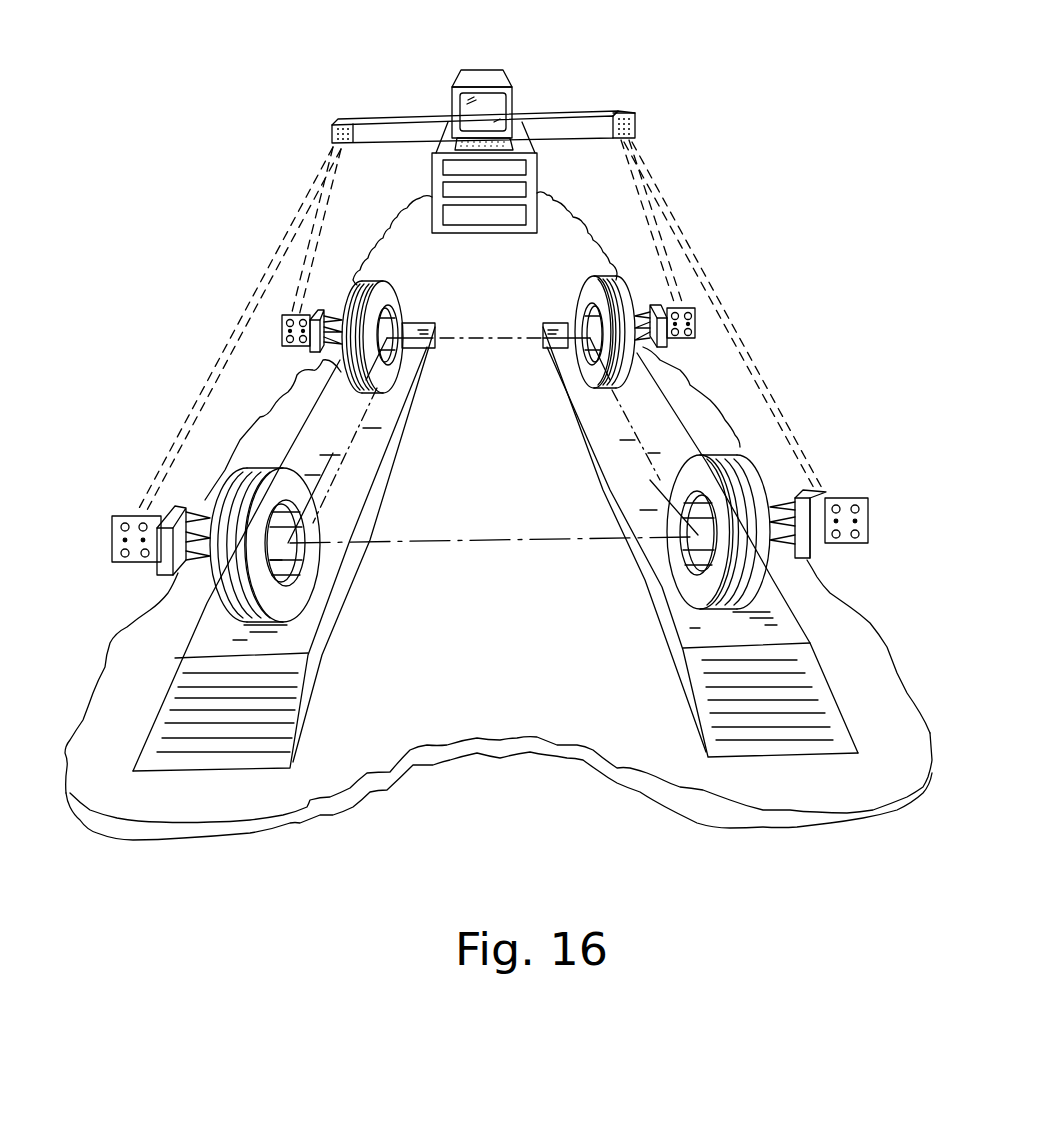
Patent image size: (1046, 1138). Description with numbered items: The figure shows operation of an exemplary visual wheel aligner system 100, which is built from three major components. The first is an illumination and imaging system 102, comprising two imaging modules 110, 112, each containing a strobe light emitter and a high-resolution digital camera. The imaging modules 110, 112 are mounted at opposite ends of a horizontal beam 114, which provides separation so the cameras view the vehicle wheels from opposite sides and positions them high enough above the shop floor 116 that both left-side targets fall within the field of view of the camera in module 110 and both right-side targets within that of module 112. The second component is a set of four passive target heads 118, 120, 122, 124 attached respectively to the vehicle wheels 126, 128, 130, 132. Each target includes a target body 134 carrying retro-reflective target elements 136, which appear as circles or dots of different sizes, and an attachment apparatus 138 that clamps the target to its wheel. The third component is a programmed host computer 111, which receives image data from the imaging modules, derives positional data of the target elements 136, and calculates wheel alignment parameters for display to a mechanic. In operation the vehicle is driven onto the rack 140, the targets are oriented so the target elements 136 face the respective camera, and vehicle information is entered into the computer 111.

The aligner system 100 is at (838, 272).
The illumination and imaging system 102 is at (597, 75).
The imaging module 110 is at (331, 129).
The host computer 111 is at (487, 78).
The imaging module 112 is at (636, 120).
The horizontal beam 114 is at (427, 118).
The shop floor 116 is at (415, 255).
The target head 118 is at (282, 330).
The target head 120 is at (130, 517).
The target head 122 is at (697, 312).
The target head 124 is at (840, 548).
The vehicle wheel 126 is at (398, 370).
The vehicle wheel 128 is at (305, 590).
The vehicle wheel 130 is at (585, 373).
The vehicle wheel 132 is at (681, 572).
The target body 134 is at (848, 496).
The target elements 136 is at (860, 534).
The attachment apparatus 138 is at (797, 492).
The rack 140 is at (590, 455).